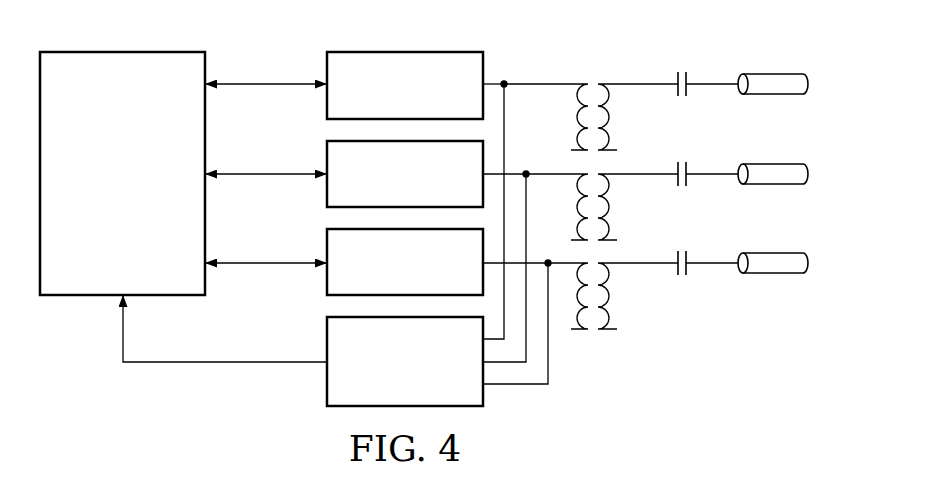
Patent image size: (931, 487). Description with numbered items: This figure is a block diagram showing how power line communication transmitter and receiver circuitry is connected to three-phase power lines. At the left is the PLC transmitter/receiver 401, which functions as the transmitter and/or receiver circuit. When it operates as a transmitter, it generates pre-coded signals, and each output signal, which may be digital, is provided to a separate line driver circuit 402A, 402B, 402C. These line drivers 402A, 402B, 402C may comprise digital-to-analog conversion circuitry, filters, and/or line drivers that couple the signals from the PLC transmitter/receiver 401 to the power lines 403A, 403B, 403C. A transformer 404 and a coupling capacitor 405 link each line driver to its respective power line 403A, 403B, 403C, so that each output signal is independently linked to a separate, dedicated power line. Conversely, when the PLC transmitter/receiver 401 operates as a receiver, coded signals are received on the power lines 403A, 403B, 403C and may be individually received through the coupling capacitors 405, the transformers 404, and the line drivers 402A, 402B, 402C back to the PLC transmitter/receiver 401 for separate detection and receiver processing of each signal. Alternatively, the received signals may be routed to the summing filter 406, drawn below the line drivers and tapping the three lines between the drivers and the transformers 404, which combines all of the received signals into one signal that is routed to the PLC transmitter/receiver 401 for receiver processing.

The PLC transmitter/receiver 401 is at (101, 237).
The line driver circuit 402A is at (327, 68).
The line driver circuit 402B is at (327, 155).
The line driver circuit 402C is at (327, 280).
The power line 403A is at (773, 72).
The power line 403B is at (773, 163).
The power line 403C is at (773, 274).
The transformer 404 is at (595, 72).
The coupling capacitor 405 is at (682, 71).
The summing filter 406 is at (327, 374).